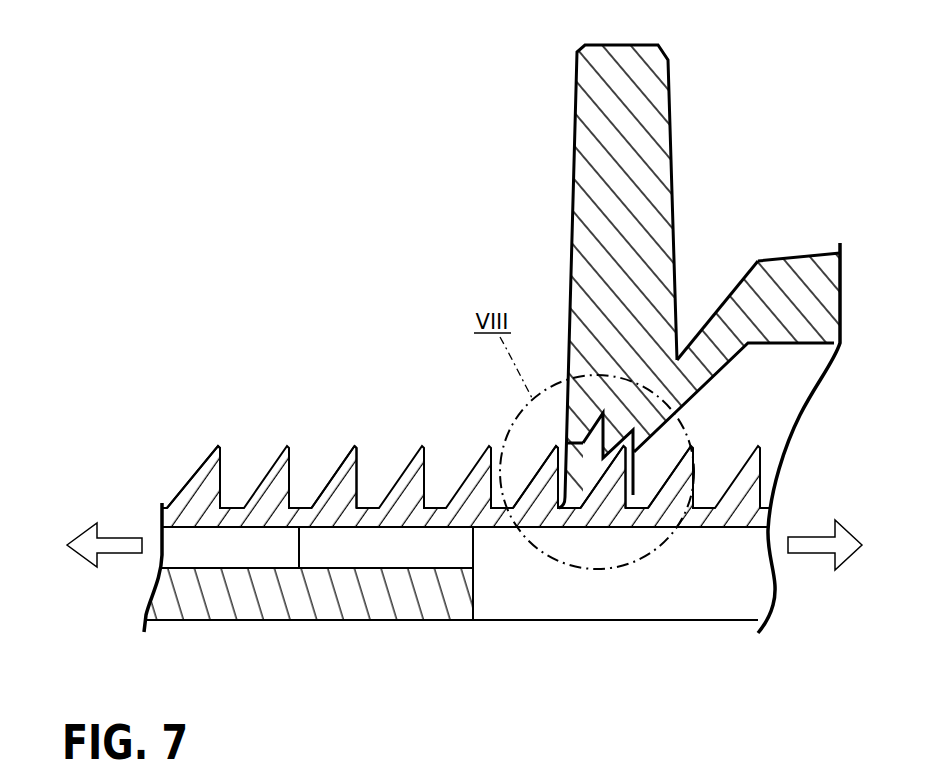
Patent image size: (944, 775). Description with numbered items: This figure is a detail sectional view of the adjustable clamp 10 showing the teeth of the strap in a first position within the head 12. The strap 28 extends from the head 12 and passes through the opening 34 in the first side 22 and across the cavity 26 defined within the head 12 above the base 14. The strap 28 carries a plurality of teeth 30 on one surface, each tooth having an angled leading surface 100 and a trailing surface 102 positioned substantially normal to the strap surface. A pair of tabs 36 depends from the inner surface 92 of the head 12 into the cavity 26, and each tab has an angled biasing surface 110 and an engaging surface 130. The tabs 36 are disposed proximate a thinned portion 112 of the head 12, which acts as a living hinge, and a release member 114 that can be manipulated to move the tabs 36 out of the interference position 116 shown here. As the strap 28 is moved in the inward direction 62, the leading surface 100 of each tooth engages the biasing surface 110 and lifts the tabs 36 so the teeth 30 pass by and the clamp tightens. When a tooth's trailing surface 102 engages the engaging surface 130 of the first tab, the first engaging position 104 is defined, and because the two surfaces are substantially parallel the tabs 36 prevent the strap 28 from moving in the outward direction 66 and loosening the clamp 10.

The adjustable clamp 10 is at (285, 193).
The head 12 is at (813, 252).
The base 14 is at (718, 622).
The first side 22 is at (758, 260).
The cavity 26 is at (772, 406).
The strap 28 is at (238, 505).
The teeth 30 is at (200, 483).
The opening 34 is at (560, 455).
The tabs 36 is at (647, 457).
The inward direction 62 is at (88, 545).
The outward direction 66 is at (841, 545).
The inner surface 92 is at (757, 384).
The leading surface 100 is at (338, 468).
The trailing surface 102 is at (357, 448).
The first engaging position 104 is at (556, 421).
The biasing surface 110 is at (653, 452).
The thinned portion 112 is at (725, 295).
The release member 114 is at (612, 161).
The interference position 116 is at (565, 91).
The engaging surface 130 is at (585, 455).